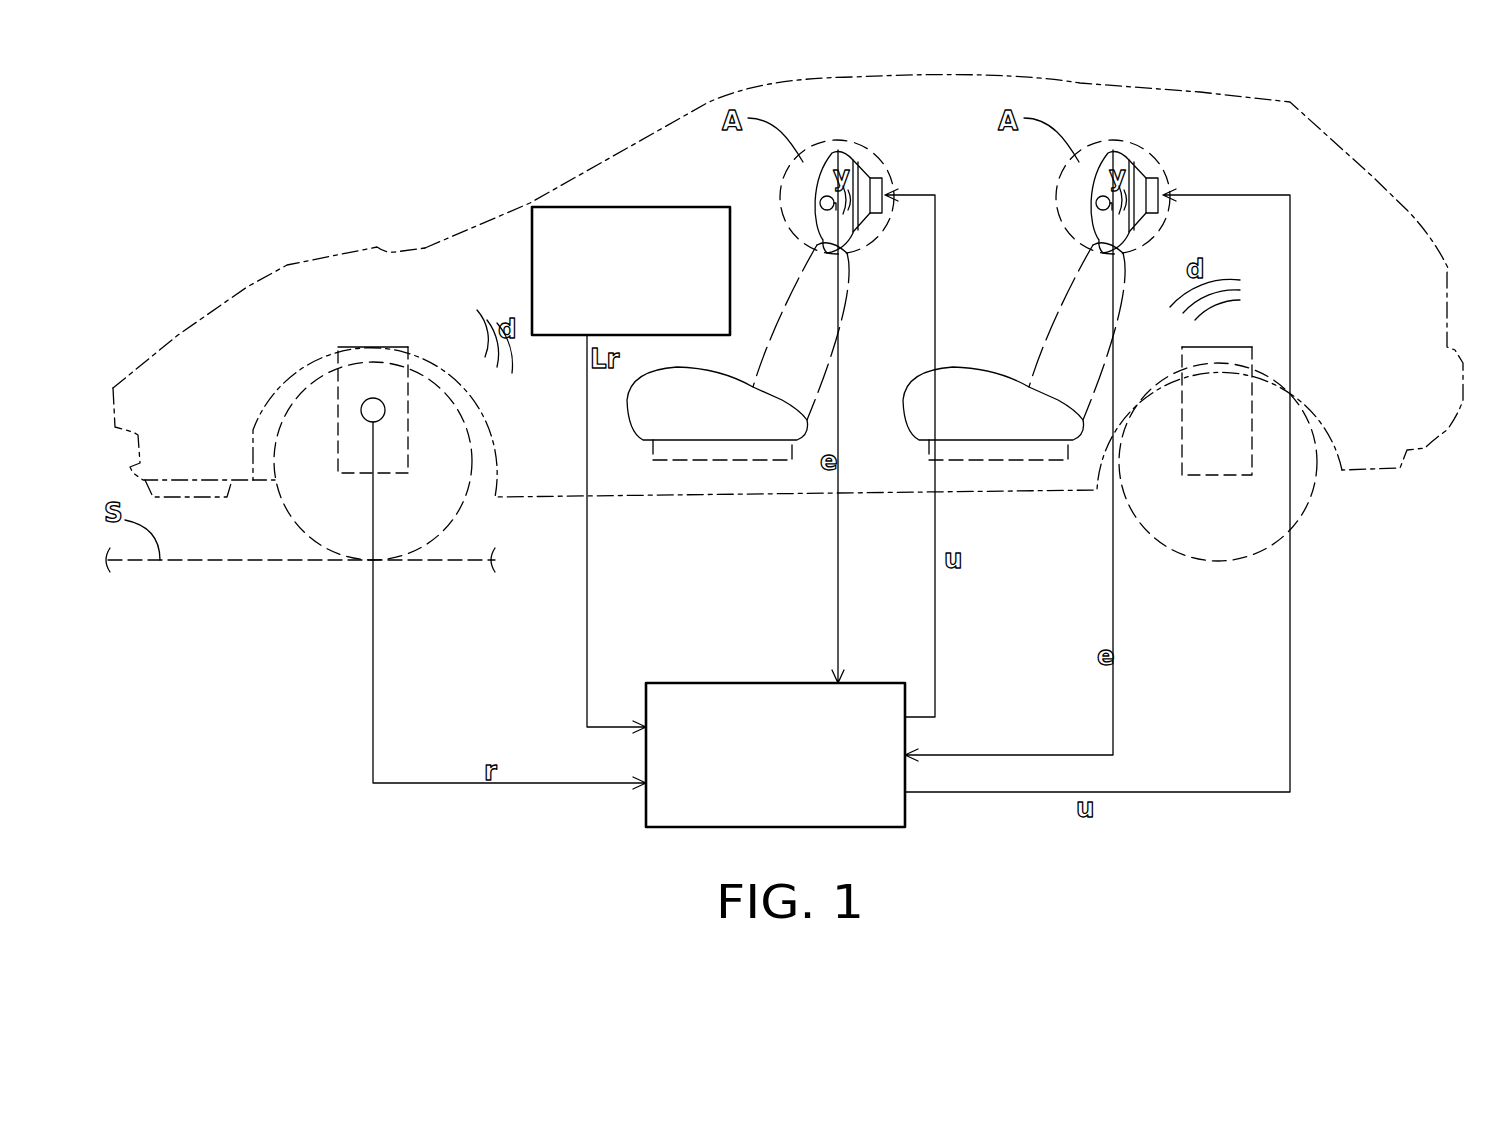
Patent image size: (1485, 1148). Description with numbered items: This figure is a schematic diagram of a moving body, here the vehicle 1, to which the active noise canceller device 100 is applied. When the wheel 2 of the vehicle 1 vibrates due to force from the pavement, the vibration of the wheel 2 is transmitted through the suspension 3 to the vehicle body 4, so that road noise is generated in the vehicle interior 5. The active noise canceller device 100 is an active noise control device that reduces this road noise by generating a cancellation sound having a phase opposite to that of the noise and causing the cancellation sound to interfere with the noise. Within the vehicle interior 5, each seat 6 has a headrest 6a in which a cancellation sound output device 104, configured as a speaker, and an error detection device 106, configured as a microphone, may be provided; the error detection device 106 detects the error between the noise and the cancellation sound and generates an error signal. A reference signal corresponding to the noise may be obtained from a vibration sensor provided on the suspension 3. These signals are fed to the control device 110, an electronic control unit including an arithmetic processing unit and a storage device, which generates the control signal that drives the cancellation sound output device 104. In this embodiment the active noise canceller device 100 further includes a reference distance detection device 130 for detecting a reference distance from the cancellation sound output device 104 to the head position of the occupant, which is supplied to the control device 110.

The vehicle 1 is at (1367, 137).
The wheel 2 is at (290, 512).
The suspension 3 is at (338, 455).
The vehicle body 4 is at (205, 318).
The vehicle interior 5 is at (992, 213).
The seat 6 is at (784, 290).
The headrest 6a is at (830, 163).
The active noise canceller device 100 is at (592, 830).
The cancellation sound output device 104 is at (878, 178).
The error detection device 106 is at (373, 398).
The control device 110 is at (862, 828).
The reference distance detection device 130 is at (532, 268).